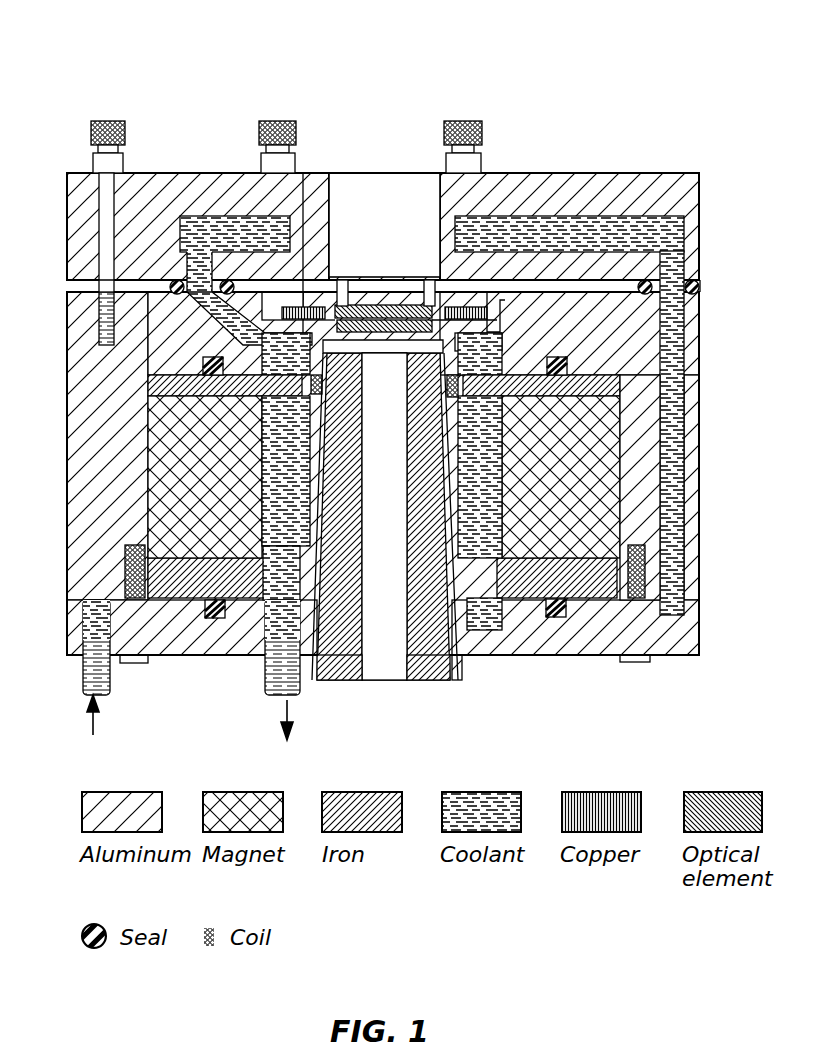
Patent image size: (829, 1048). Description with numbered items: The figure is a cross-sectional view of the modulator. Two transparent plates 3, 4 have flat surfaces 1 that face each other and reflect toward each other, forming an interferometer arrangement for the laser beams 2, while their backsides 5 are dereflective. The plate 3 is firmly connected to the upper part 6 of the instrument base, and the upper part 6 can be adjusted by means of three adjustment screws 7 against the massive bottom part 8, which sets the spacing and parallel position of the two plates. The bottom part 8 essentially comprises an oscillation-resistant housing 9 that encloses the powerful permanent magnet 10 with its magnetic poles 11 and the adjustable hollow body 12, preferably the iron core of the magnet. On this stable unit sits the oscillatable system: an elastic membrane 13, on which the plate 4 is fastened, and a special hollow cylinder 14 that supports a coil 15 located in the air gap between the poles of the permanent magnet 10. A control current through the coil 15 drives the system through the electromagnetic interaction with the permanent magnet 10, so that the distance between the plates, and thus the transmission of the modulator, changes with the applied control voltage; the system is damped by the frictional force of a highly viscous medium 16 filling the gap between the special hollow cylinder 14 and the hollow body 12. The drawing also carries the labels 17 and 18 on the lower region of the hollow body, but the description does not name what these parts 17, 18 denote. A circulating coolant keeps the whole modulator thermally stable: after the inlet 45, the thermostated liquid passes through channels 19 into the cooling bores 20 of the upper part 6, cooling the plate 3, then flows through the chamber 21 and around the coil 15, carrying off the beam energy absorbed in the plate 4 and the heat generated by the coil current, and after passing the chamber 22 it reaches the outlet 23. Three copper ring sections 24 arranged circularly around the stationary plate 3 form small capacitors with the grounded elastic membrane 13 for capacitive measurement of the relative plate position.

The flat surfaces 1 is at (362, 320).
The laser beams 2 is at (392, 104).
The plate 3 is at (372, 317).
The plate 4 is at (388, 330).
The backsides 5 is at (406, 318).
The upper part of the instrument base 6 is at (150, 190).
The adjustment screws 7 is at (110, 120).
The bottom part of the instrument base 8 is at (80, 370).
The housing 9 is at (650, 428).
The permanent magnet 10 is at (612, 460).
The magnetic poles 11 is at (612, 378).
The hollow body 12 is at (428, 668).
The elastic membrane 13 is at (488, 332).
The special hollow cylinder 14 is at (458, 468).
The coil 15 is at (470, 372).
The highly viscous medium 16 is at (316, 498).
The central bore 17 is at (450, 572).
The iron core bottom 18 is at (312, 680).
The channels 19 is at (675, 540).
The cooling bores 20 is at (292, 222).
The chamber 21 is at (268, 345).
The chamber 22 is at (305, 424).
The outlet 23 is at (268, 690).
The copper ring sections 24 is at (306, 306).
The inlet 45 is at (110, 684).